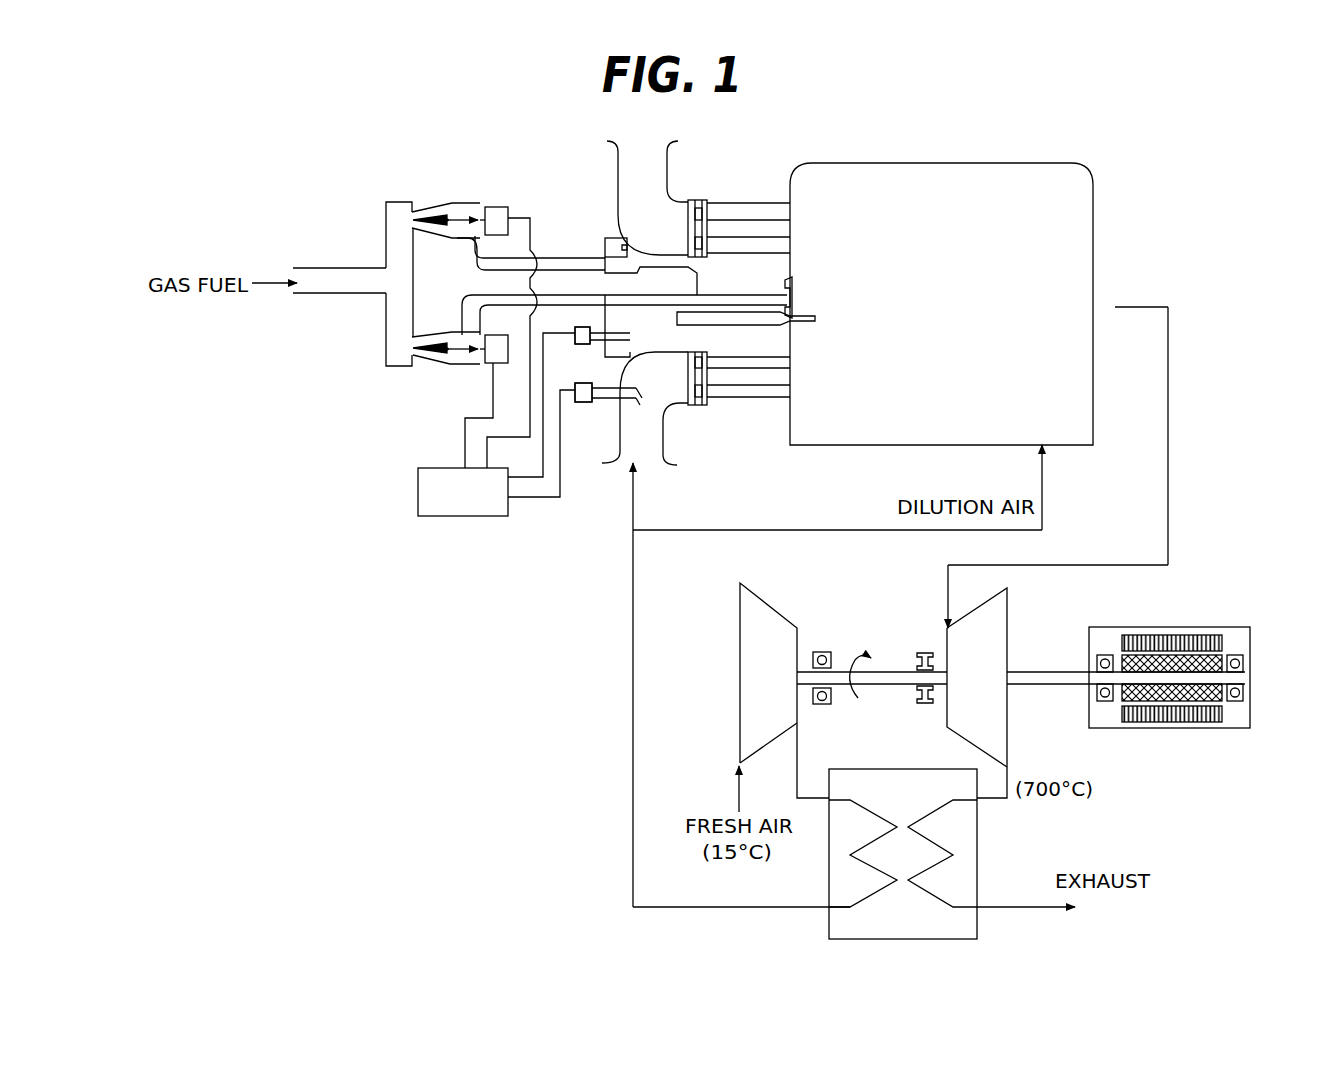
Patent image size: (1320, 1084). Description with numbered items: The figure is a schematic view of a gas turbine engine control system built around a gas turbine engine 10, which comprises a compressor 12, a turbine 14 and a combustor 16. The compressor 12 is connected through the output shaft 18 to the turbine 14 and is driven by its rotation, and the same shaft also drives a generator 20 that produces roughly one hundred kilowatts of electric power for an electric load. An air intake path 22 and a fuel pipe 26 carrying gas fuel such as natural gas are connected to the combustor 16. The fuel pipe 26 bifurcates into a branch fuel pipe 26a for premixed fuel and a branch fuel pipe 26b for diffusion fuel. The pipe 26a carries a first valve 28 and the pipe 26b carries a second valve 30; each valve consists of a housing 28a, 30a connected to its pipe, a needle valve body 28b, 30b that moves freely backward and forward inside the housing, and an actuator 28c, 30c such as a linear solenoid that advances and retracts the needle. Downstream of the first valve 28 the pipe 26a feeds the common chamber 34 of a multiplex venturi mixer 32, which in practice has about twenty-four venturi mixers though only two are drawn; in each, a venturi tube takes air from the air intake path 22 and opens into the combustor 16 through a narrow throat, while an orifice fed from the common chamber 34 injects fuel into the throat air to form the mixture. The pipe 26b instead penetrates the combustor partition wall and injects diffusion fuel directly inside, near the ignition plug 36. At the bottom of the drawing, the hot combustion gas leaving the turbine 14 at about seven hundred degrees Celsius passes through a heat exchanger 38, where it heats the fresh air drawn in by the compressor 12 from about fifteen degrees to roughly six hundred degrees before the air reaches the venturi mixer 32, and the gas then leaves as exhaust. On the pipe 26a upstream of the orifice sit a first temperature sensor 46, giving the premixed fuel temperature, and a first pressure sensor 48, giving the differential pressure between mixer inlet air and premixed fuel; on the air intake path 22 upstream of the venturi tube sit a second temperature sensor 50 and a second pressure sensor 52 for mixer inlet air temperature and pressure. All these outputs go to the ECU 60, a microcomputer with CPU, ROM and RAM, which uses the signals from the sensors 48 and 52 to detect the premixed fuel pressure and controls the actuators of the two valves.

The gas turbine engine 10 is at (1122, 285).
The compressor 12 is at (779, 688).
The turbine 14 is at (982, 690).
The combustor 16 is at (1093, 183).
The output shaft 18 is at (882, 668).
The generator 20 is at (1157, 627).
The air intake path 22 is at (667, 157).
The fuel pipe 26 is at (317, 267).
The branch fuel pipe 26a is at (386, 213).
The branch fuel pipe 26b is at (393, 366).
The first valve 28 is at (487, 302).
The housing 28a is at (462, 203).
The needle valve body 28b is at (422, 229).
The actuator 28c is at (510, 206).
The second valve 30 is at (467, 377).
The housing 30a is at (452, 365).
The needle valve body 30b is at (430, 337).
The actuator 30c is at (513, 328).
The multiplex venturi mixer 32 is at (718, 192).
The common chamber 34 is at (700, 272).
The ignition plug 36 is at (798, 313).
The heat exchanger 38 is at (902, 769).
The first temperature sensor 46 is at (575, 330).
The first pressure sensor 48 is at (585, 345).
The second temperature sensor 50 is at (575, 389).
The second pressure sensor 52 is at (583, 405).
The ECU 60 is at (478, 517).